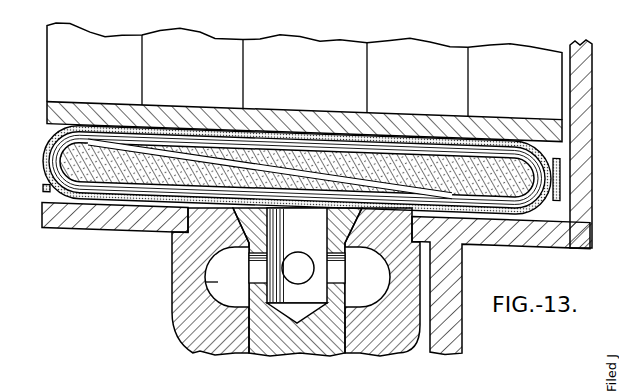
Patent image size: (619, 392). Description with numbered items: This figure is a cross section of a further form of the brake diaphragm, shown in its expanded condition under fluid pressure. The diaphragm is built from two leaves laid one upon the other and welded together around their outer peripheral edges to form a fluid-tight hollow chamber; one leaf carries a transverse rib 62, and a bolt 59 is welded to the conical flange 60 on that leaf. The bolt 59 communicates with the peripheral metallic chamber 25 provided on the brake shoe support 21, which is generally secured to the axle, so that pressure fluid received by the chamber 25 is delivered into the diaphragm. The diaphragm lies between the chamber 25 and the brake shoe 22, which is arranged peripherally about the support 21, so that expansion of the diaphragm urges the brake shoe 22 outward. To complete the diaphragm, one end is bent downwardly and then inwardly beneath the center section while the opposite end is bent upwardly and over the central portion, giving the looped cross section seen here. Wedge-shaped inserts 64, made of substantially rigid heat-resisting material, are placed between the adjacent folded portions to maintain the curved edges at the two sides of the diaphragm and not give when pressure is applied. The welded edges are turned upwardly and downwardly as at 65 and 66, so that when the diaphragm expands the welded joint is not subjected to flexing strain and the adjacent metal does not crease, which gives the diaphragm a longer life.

The brake shoe support 21 is at (463, 340).
The brake shoe 22 is at (306, 56).
The peripheral metallic chamber 25 is at (172, 298).
The bolt 59 is at (265, 345).
The conical flange 60 is at (172, 255).
The transverse rib 62 is at (225, 300).
The wedge-shaped inserts 64 is at (407, 153).
The upwardly turned welded edge 65 is at (0, 142).
The downwardly turned welded edge 66 is at (43, 186).